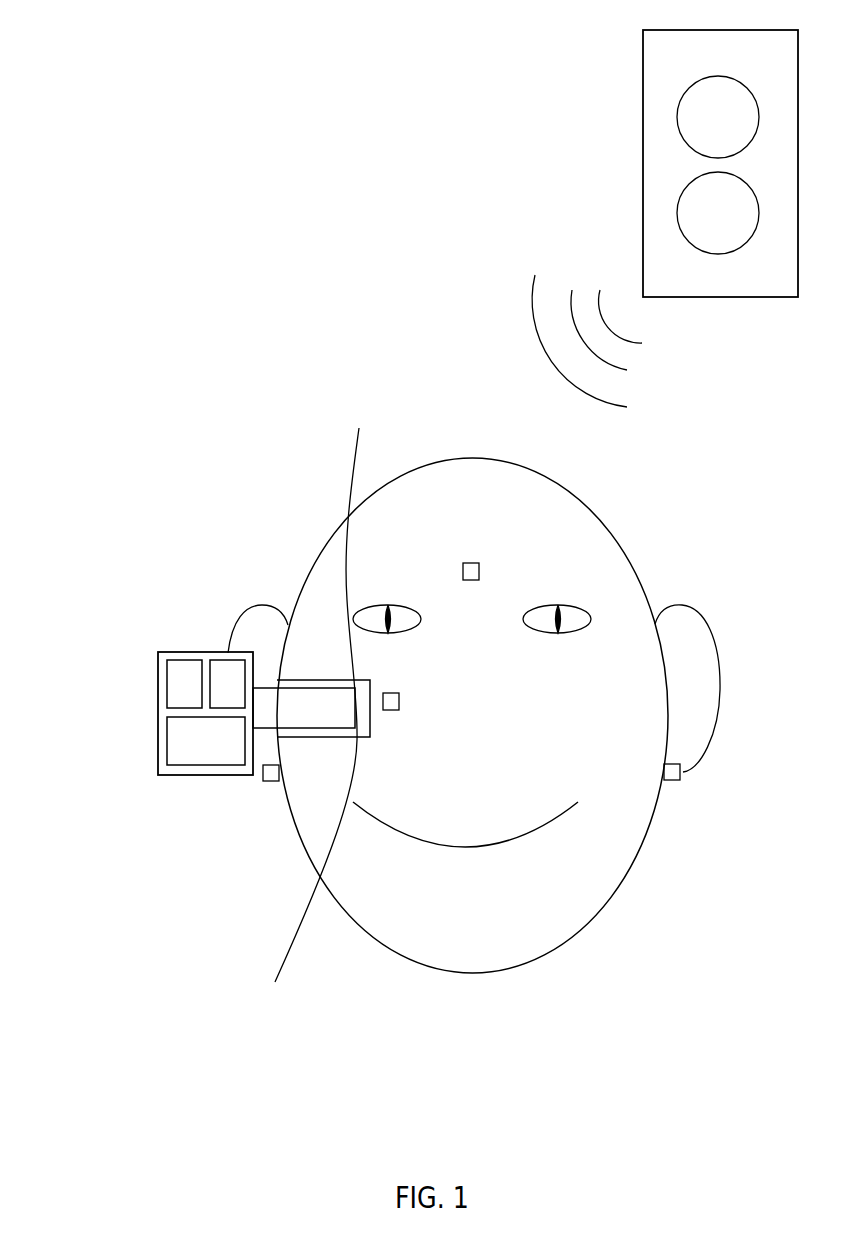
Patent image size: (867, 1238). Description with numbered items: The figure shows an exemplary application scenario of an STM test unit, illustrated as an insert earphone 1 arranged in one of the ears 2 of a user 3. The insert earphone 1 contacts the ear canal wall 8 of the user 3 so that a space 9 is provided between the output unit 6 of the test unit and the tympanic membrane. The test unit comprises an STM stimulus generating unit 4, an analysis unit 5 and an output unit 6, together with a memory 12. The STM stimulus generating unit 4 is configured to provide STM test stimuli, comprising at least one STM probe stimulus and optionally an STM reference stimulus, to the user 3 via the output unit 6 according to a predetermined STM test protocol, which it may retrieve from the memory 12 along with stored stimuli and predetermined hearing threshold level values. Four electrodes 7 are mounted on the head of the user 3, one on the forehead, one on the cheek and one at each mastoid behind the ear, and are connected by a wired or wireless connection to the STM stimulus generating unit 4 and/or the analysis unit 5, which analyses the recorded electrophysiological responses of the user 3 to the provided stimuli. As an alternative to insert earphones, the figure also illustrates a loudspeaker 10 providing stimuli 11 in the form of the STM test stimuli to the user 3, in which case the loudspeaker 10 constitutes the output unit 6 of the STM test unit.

The insert earphone 1 is at (174, 713).
The ear 2 is at (253, 605).
The user 3 is at (640, 580).
The STM stimulus generating unit 4 is at (221, 698).
The analysis unit 5 is at (200, 750).
The output unit 6 is at (307, 718).
The electrodes 7 is at (463, 563).
The ear canal wall 8 is at (358, 567).
The space 9 is at (302, 876).
The loudspeaker 10 is at (643, 157).
The stimuli 11 is at (504, 357).
The memory 12 is at (174, 698).